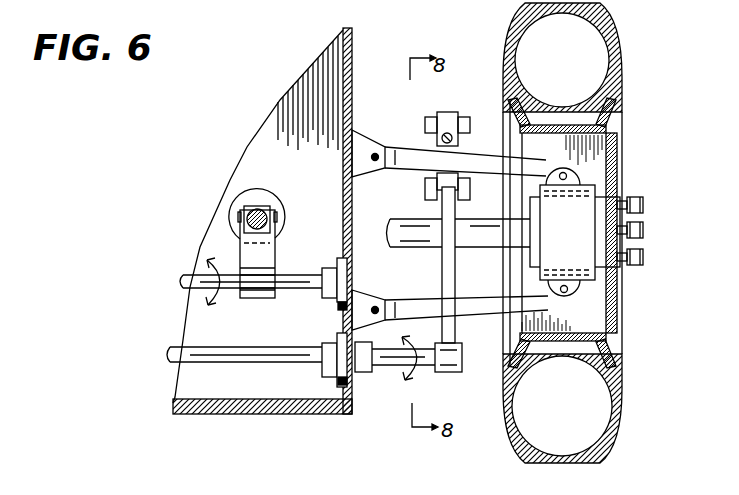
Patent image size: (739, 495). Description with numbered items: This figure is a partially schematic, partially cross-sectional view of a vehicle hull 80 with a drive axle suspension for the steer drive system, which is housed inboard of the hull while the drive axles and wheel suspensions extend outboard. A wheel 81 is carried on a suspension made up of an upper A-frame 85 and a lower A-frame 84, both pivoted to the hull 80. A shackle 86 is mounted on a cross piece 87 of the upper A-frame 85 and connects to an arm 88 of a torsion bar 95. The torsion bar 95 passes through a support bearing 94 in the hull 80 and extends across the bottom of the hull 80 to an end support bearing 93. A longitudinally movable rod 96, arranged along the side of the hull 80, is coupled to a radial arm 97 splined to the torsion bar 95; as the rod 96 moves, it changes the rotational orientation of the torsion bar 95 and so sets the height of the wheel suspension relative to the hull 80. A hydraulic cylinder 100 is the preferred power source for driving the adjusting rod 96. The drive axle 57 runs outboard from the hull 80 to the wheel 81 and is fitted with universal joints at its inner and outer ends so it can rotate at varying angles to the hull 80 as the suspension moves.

The hull 80 is at (354, 30).
The wheel 81 is at (618, 47).
The lower A-frame 84 is at (478, 308).
The upper A-frame 85 is at (412, 160).
The shackle 86 is at (470, 177).
The cross piece 87 is at (437, 140).
The arm 88 is at (452, 280).
The drive axle 57 is at (416, 250).
The end support bearing 93 is at (337, 306).
The support bearing 94 is at (336, 380).
The torsion bar 95 is at (183, 281).
The rod 96 is at (264, 206).
The radial arm 97 is at (278, 258).
The hydraulic cylinder 100 is at (233, 212).